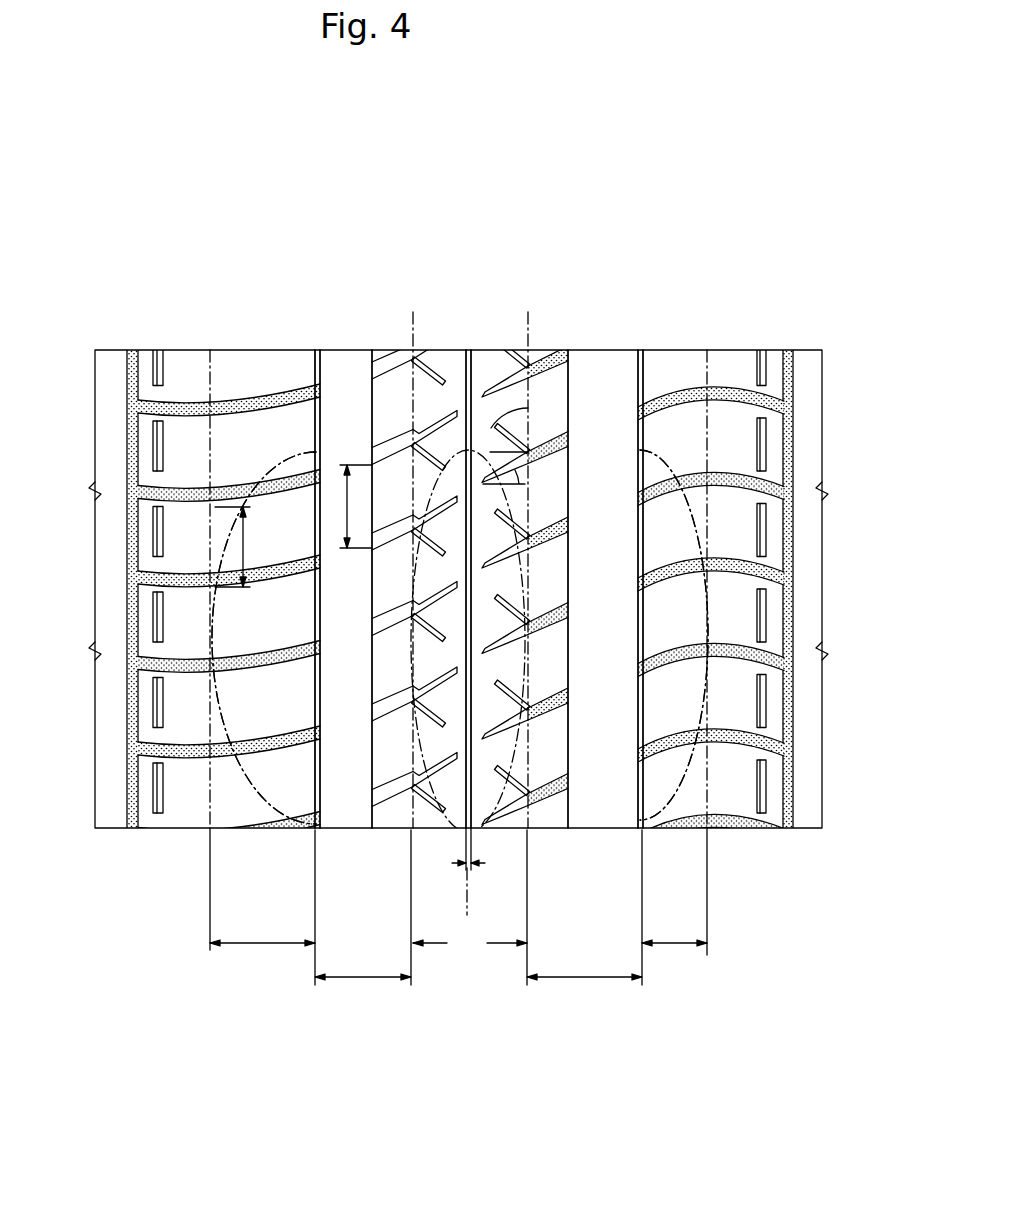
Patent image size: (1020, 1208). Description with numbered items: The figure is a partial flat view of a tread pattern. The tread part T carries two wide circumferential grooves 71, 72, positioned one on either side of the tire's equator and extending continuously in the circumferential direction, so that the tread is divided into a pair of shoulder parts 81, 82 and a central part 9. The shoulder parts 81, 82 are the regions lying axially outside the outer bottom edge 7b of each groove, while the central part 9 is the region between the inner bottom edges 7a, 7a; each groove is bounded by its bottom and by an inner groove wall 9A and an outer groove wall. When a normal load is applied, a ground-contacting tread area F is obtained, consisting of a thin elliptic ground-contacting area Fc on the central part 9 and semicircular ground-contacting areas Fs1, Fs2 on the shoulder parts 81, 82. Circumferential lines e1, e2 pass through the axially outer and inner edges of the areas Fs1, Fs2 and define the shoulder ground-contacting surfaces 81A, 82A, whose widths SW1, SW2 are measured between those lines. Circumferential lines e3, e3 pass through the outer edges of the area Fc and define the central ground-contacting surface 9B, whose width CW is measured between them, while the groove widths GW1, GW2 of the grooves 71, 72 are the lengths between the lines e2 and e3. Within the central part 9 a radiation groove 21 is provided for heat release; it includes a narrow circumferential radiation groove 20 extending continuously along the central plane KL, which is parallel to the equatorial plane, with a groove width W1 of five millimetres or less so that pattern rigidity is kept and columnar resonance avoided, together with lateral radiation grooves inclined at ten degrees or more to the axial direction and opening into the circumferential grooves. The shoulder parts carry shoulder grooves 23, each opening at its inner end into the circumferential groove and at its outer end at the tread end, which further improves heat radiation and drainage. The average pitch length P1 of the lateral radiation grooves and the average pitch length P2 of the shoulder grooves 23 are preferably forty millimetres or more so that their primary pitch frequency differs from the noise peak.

The tread part T is at (708, 303).
The shoulder part 81 is at (308, 856).
The shoulder part 82 is at (783, 856).
The shoulder groove 23 is at (727, 390).
The shoulder ground-contacting surface 81A is at (213, 350).
The shoulder ground-contacting surface 82A is at (708, 350).
The circumferential groove 71 is at (408, 856).
The circumferential groove 72 is at (640, 856).
The inner bottom edge 7a is at (370, 350).
The outer bottom edge 7b is at (335, 350).
The circumferential line e1 is at (185, 342).
The circumferential line e2 is at (313, 352).
The circumferential line e3 is at (416, 332).
The central part 9 is at (470, 530).
The inner groove wall 9A is at (412, 311).
The central ground-contacting surface 9B is at (471, 551).
The circumferential radiation groove 20 is at (438, 832).
The radiation groove 21 is at (468, 589).
The average pitch length of the lateral radiation groove P1 is at (345, 497).
The average pitch length of the shoulder groove P2 is at (243, 550).
The ground-contacting area of the shoulder part Fs1 is at (313, 720).
The ground-contacting area of the shoulder part Fs2 is at (677, 780).
The ground-contacting area of the central part Fc is at (510, 753).
The ground-contacting tread area F is at (698, 760).
The width of the shoulder ground-contacting area SW1 is at (252, 945).
The width of the shoulder ground-contacting area SW2 is at (670, 945).
The groove width GW1 is at (365, 978).
The groove width GW2 is at (577, 978).
The width of the ground-contacting area Fc CW is at (470, 945).
The groove width W1 is at (465, 866).
The central plane KL is at (467, 893).